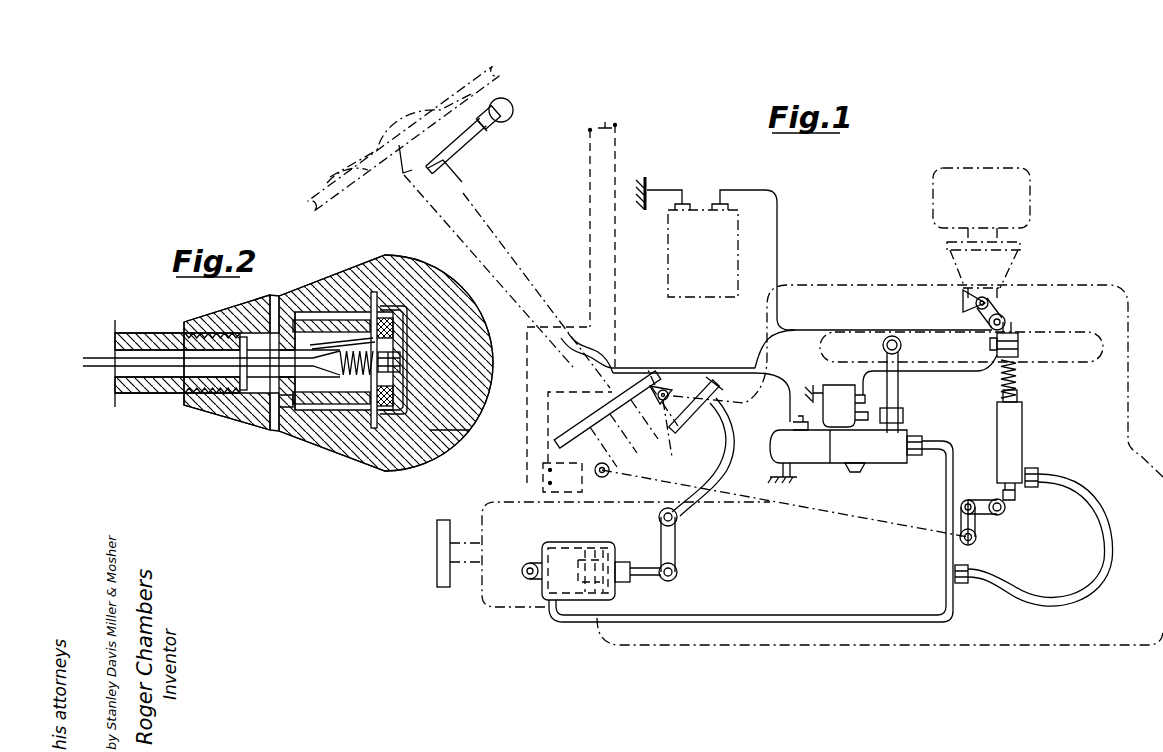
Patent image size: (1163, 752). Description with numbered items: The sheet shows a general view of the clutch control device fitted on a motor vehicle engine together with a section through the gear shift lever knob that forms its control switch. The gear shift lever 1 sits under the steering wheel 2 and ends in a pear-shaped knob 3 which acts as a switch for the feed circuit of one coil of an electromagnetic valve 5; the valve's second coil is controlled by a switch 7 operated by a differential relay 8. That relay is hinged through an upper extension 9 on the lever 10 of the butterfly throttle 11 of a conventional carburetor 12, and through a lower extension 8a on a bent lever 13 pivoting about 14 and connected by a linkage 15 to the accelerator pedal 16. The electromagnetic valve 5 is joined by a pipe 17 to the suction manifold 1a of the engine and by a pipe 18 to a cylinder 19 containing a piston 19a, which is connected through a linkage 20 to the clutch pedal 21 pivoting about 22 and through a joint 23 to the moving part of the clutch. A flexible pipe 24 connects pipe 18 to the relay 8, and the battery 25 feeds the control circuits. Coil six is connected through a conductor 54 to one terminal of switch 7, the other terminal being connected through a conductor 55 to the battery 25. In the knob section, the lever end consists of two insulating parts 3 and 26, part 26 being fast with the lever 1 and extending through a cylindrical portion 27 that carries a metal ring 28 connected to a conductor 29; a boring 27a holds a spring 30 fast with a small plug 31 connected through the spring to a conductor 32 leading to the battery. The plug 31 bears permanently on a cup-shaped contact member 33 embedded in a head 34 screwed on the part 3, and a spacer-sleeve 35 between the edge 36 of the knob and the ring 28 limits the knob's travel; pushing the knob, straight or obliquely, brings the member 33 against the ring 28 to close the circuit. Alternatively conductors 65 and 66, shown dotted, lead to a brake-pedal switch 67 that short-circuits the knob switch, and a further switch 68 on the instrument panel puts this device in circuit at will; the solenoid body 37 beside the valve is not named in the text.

In FIG. 1, the gear shift lever 1 is at (450, 152).
In FIG. 2, the gear shift lever 1 is at (157, 385).
In FIG. 1, the suction manifold 1a is at (873, 325).
In FIG. 1, the steering wheel 2 is at (437, 108).
In FIG. 1, the pear-shaped knob 3 is at (503, 118).
In FIG. 2, the pear-shaped knob 3 is at (300, 300).
In FIG. 1, the electromagnetic valve 5 is at (860, 455).
In FIG. 1, the switch 7 is at (1020, 343).
In FIG. 1, the differential relay 8 is at (1009, 428).
In FIG. 1, the lower extension 8a is at (1003, 506).
In FIG. 1, the upper extension 9 is at (1009, 320).
In FIG. 1, the lever 10 is at (994, 306).
In FIG. 1, the butterfly throttle 11 is at (965, 300).
In FIG. 1, the carburetor 12 is at (1022, 245).
In FIG. 1, the bent lever 13 is at (983, 500).
In FIG. 1, the pivot 14 is at (968, 500).
In FIG. 1, the linkage 15 is at (905, 527).
In FIG. 1, the accelerator pedal 16 is at (587, 425).
In FIG. 1, the pipe 17 is at (899, 394).
In FIG. 1, the pipe 18 is at (938, 482).
In FIG. 1, the cylinder 19 is at (565, 548).
In FIG. 1, the piston 19a is at (593, 550).
In FIG. 1, the linkage 20 is at (677, 547).
In FIG. 1, the clutch pedal 21 is at (697, 380).
In FIG. 1, the pivot 22 is at (678, 517).
In FIG. 1, the joint 23 is at (528, 564).
In FIG. 1, the flexible pipe 24 is at (1098, 578).
In FIG. 1, the battery 25 is at (683, 248).
In FIG. 1, the insulating part 26 is at (490, 132).
In FIG. 2, the insulating part 26 is at (235, 408).
In FIG. 2, the cylindrical portion 27 is at (305, 400).
In FIG. 2, the boring 27a is at (325, 345).
In FIG. 2, the metal ring 28 is at (392, 412).
In FIG. 1, the conductor 29 is at (783, 387).
In FIG. 2, the conductor 29 is at (140, 358).
In FIG. 2, the spring 30 is at (352, 376).
In FIG. 2, the plug 31 is at (402, 367).
In FIG. 1, the conductor 32 is at (630, 368).
In FIG. 2, the conductor 32 is at (95, 372).
In FIG. 2, the cup-shaped contact member 33 is at (378, 300).
In FIG. 1, the head 34 is at (514, 105).
In FIG. 2, the head 34 is at (440, 430).
In FIG. 2, the spacer-sleeve 35 is at (337, 322).
In FIG. 2, the edge 36 is at (280, 402).
In FIG. 1, the solenoid 37 is at (820, 460).
In FIG. 1, the conductor 54 is at (980, 373).
In FIG. 1, the conductor 55 is at (920, 332).
In FIG. 1, the conductor 65 is at (588, 315).
In FIG. 1, the conductor 66 is at (568, 363).
In FIG. 1, the switch 67 is at (562, 477).
In FIG. 1, the switch 68 is at (607, 124).